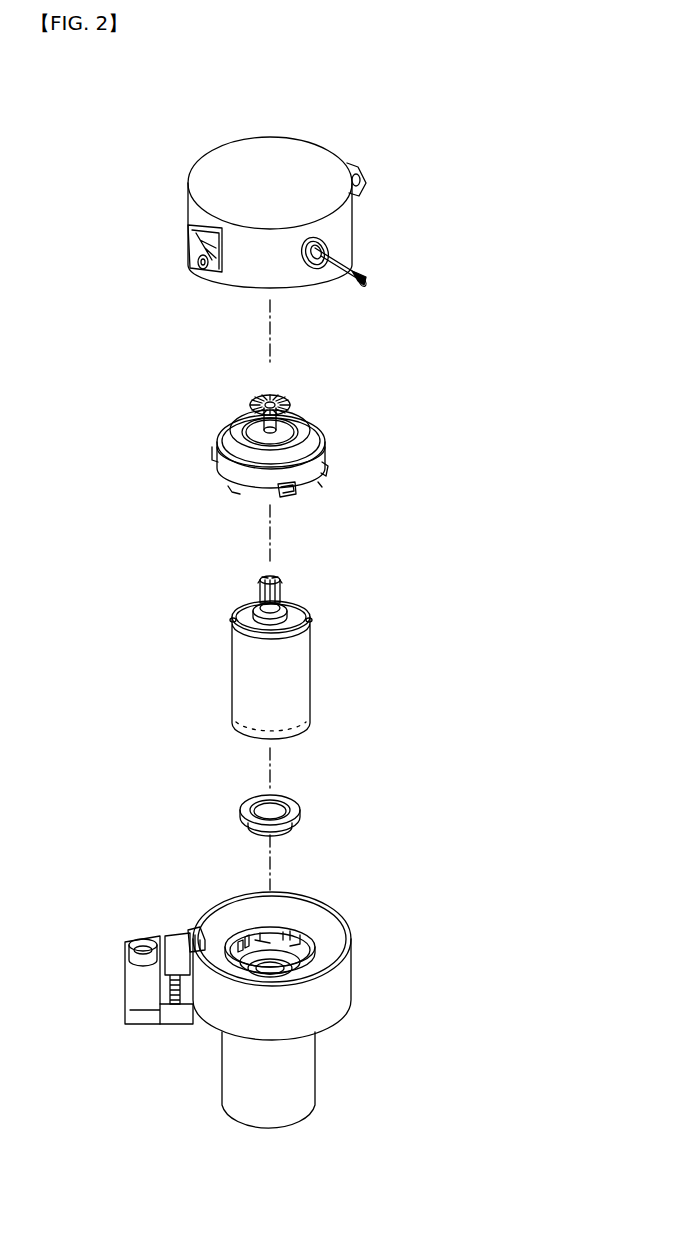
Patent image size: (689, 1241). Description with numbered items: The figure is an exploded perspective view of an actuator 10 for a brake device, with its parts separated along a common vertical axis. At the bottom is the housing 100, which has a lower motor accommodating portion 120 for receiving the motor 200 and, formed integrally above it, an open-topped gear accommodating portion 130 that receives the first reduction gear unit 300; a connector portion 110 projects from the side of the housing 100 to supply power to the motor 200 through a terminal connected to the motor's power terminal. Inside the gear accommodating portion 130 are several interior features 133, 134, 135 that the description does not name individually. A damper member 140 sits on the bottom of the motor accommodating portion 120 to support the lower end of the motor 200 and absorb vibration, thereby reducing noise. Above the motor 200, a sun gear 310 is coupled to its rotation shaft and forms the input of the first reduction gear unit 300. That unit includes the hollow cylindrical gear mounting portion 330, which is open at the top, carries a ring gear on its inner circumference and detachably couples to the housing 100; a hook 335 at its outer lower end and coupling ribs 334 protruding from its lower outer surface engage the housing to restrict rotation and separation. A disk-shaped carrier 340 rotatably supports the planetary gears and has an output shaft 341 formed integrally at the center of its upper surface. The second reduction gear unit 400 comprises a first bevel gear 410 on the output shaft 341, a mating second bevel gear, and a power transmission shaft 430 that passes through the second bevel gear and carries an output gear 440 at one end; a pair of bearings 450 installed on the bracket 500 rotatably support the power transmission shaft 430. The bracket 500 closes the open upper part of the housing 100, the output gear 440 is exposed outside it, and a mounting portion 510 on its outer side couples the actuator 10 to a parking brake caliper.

The actuator 10 is at (502, 597).
The housing 100 is at (350, 1036).
The connector portion 110 is at (134, 1023).
The motor accommodating portion 120 is at (198, 926).
The gear accommodating portion 130 is at (322, 919).
The inner seat 133 is at (342, 945).
The rib 134 is at (280, 928).
The guide 135 is at (253, 933).
The damper member 140 is at (302, 811).
The motor 200 is at (315, 661).
The first reduction gear unit 300 is at (214, 387).
The sun gear 310 is at (283, 581).
The gear mounting portion 330 is at (219, 471).
The coupling ribs 334 is at (297, 493).
The hook 335 is at (324, 470).
The carrier 340 is at (226, 430).
The output shaft 341 is at (306, 440).
The second reduction gear unit 400 is at (334, 289).
The first bevel gear 410 is at (291, 405).
The power transmission shaft 430 is at (347, 263).
The output gear 440 is at (364, 283).
The bearing 450 is at (324, 246).
The bracket 500 is at (348, 143).
The mounting portion 510 is at (192, 253).